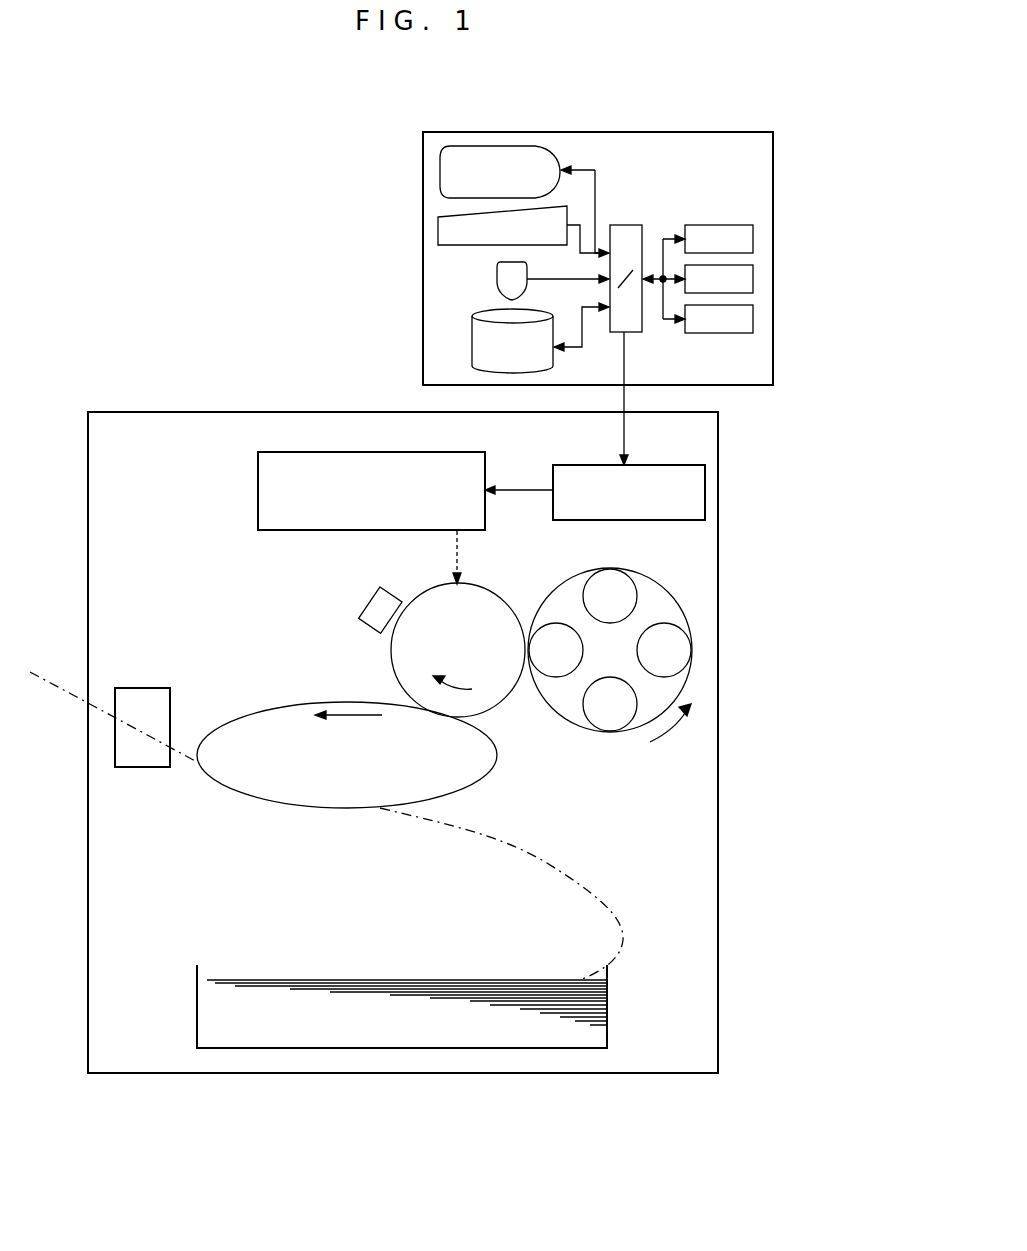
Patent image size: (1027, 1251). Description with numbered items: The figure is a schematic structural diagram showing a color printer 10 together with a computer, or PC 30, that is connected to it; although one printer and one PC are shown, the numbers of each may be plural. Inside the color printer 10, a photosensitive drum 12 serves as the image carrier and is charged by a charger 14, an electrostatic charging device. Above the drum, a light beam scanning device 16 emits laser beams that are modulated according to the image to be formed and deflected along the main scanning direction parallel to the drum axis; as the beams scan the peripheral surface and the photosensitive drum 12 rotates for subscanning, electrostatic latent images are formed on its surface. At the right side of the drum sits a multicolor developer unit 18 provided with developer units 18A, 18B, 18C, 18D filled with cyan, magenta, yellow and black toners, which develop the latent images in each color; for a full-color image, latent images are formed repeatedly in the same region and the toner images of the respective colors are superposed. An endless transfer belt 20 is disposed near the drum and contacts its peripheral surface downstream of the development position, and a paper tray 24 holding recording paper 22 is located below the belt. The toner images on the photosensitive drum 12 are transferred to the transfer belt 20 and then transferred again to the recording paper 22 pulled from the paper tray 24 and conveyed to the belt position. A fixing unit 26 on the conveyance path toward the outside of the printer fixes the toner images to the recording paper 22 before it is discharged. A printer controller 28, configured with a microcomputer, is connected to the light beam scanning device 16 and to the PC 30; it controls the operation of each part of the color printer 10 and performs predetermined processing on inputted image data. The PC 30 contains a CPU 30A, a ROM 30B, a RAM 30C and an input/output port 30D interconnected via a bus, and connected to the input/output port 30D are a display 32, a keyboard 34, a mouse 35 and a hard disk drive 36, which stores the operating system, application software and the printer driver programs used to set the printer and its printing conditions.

The color printer 10 is at (270, 410).
The photosensitive drum 12 is at (390, 665).
The charger 14 is at (366, 606).
The light beam scanning device 16 is at (258, 492).
The multicolor developer unit 18 is at (654, 665).
The developer unit 18A is at (660, 627).
The developer unit 18B is at (597, 576).
The developer unit 18C is at (553, 668).
The developer unit 18D is at (615, 720).
The transfer belt 20 is at (494, 770).
The recording paper 22 is at (408, 980).
The paper tray 24 is at (196, 1003).
The fixing unit 26 is at (150, 688).
The printer controller 28 is at (707, 495).
The computer (PC) 30 is at (613, 131).
The CPU 30A is at (755, 280).
The ROM 30B is at (755, 239).
The RAM 30C is at (755, 320).
The input/output port 30D is at (633, 224).
The display 32 is at (440, 175).
The keyboard 34 is at (438, 232).
The mouse 35 is at (497, 282).
The hard disk drive (HDD) 36 is at (472, 343).